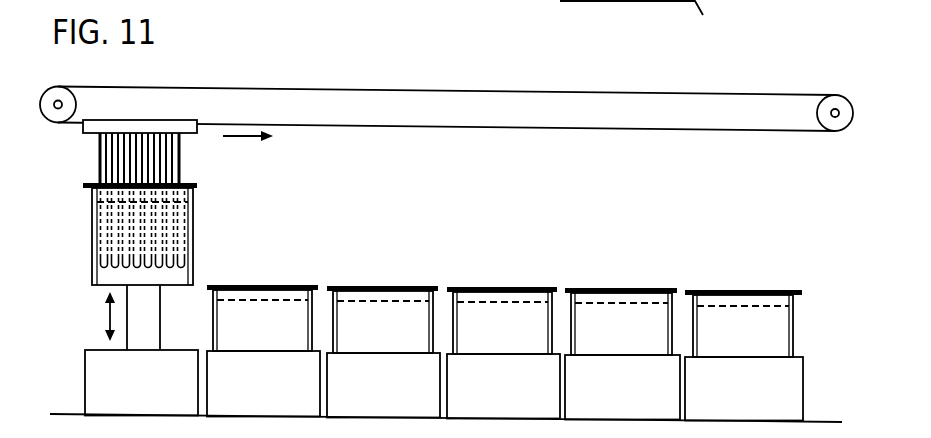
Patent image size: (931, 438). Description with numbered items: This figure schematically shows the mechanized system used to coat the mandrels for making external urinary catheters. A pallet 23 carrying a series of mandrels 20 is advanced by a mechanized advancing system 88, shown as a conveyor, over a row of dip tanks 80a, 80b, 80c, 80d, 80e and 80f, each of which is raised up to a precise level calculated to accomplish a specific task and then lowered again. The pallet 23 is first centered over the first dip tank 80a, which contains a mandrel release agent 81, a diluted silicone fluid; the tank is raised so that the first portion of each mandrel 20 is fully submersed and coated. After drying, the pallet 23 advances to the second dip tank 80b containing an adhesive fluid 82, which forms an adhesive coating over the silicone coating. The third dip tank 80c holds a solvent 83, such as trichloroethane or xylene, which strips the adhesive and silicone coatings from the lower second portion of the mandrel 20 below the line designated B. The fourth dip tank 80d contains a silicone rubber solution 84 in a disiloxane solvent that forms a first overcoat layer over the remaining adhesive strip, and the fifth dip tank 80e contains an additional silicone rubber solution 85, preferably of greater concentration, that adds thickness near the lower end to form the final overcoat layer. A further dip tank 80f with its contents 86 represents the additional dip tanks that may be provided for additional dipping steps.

The mechanized advancing system 88 is at (351, 79).
The pallet 23 is at (163, 119).
The mandrel 20 is at (181, 157).
The first dip tank 80a is at (92, 228).
The mandrel release agent 81 is at (186, 243).
The second dip tank 80b is at (268, 285).
The adhesive fluid 82 is at (248, 290).
The third dip tank 80c is at (390, 286).
The solvent 83 is at (355, 300).
The fourth dip tank 80d is at (512, 287).
The silicone rubber solution 84 is at (485, 300).
The fifth dip tank 80e is at (627, 290).
The additional silicone rubber solution 85 is at (605, 301).
The dip tank 80f is at (745, 290).
The liquid bath in sixth container 86 is at (723, 294).